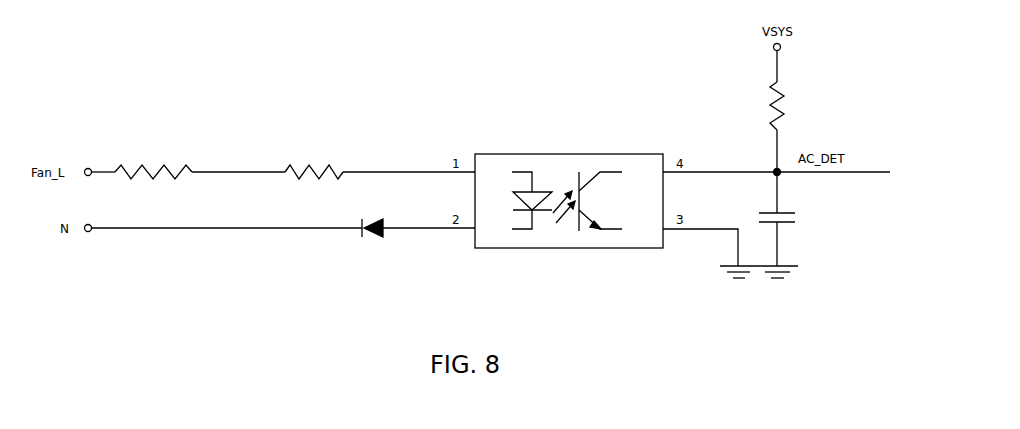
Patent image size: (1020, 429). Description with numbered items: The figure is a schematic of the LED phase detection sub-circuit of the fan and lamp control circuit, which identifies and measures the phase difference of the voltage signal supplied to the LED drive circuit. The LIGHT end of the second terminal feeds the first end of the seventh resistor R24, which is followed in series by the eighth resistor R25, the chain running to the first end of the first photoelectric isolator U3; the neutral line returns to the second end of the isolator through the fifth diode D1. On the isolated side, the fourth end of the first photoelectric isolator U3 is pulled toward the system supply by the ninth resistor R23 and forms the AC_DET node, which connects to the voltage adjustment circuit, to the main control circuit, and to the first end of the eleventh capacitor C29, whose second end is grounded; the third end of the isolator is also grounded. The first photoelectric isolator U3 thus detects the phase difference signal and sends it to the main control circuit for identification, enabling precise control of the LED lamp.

The seventh resistor R24 is at (153, 168).
The eighth resistor R25 is at (305, 168).
The fifth diode D1 is at (353, 234).
The first photoelectric isolator U3 is at (569, 210).
The ninth resistor R23 is at (799, 106).
The eleventh capacitor C29 is at (789, 221).